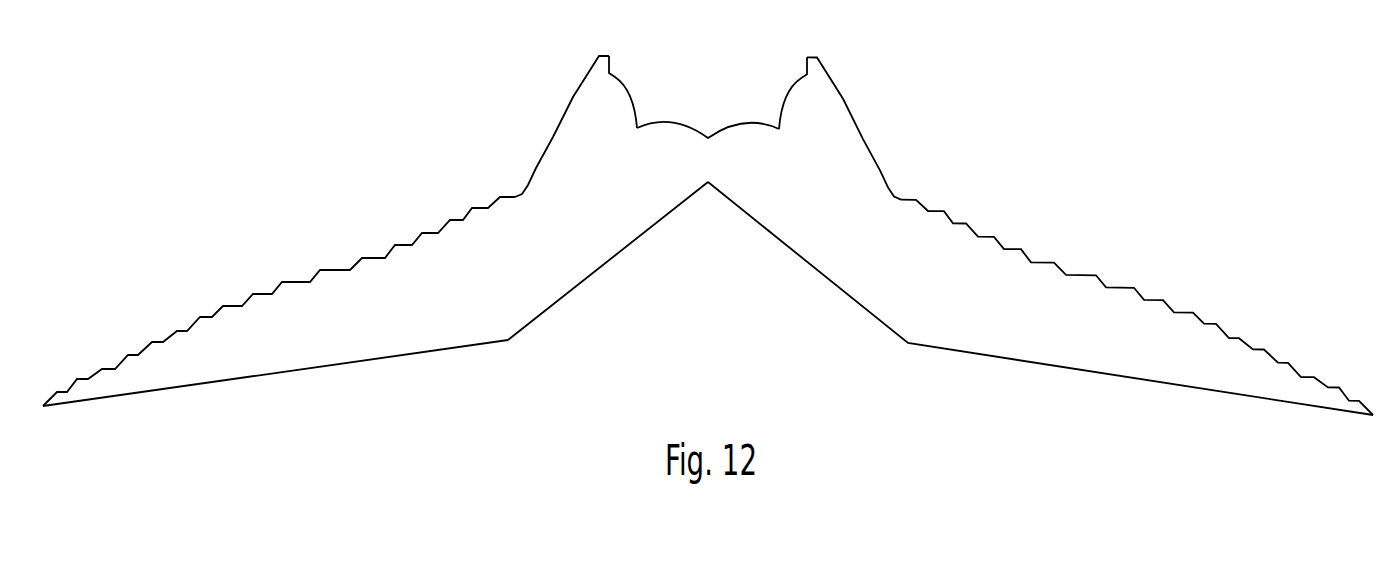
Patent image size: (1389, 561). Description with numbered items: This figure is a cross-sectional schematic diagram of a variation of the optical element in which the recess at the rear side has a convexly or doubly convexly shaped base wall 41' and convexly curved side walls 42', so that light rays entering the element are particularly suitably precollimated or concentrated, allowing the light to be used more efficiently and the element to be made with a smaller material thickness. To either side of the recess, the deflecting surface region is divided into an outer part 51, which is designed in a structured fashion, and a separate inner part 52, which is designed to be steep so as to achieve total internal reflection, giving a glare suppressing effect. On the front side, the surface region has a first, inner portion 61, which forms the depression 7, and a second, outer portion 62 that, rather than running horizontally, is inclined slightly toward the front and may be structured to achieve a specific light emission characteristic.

The depression 7 is at (708, 308).
The base wall 41' is at (708, 99).
The side walls 42' is at (708, 79).
The outer part 51 is at (288, 262).
The inner part 52 is at (550, 125).
The first, inner portion 61 is at (614, 261).
The second, outer portion 62 is at (412, 356).